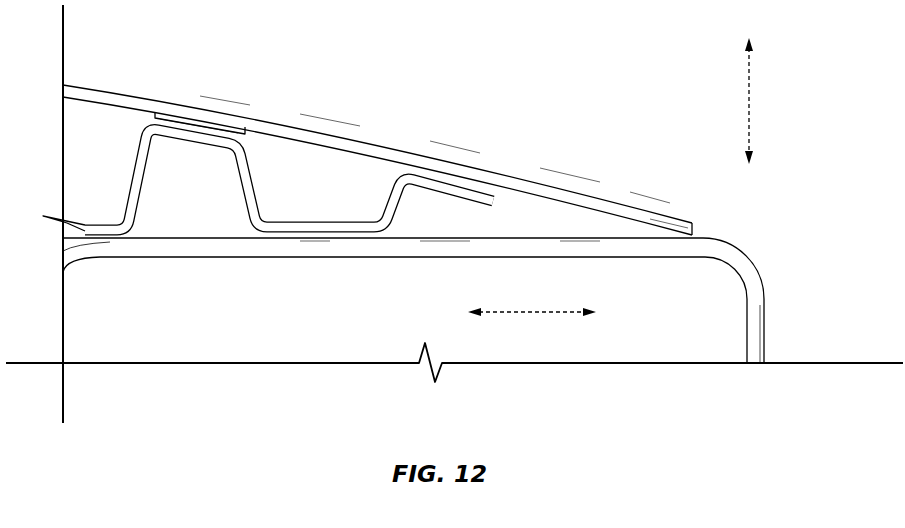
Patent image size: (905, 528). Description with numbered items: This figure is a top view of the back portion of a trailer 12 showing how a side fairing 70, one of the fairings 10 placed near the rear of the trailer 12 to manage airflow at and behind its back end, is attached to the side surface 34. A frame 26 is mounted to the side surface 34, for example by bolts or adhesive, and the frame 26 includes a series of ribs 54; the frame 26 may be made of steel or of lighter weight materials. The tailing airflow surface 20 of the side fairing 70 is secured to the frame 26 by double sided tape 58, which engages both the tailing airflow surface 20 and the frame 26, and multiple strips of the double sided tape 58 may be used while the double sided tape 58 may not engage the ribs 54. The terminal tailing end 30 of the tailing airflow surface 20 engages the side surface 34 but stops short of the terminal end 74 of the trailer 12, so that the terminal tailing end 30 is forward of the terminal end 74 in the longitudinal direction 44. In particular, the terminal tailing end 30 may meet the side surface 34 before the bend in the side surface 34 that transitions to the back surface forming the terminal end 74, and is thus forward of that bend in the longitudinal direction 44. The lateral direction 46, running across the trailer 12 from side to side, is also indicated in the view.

The fairing 10 is at (395, 148).
The side fairing 70 is at (395, 148).
The tailing airflow surface 20 is at (395, 160).
The trailer 12 is at (453, 249).
The side surface 34 is at (538, 228).
The terminal end 74 is at (775, 319).
The terminal tailing end 30 is at (694, 231).
The frame 26 is at (124, 180).
The ribs 54 is at (268, 222).
The double sided tape 58 is at (197, 125).
The longitudinal direction 44 is at (531, 313).
The lateral direction 46 is at (748, 100).